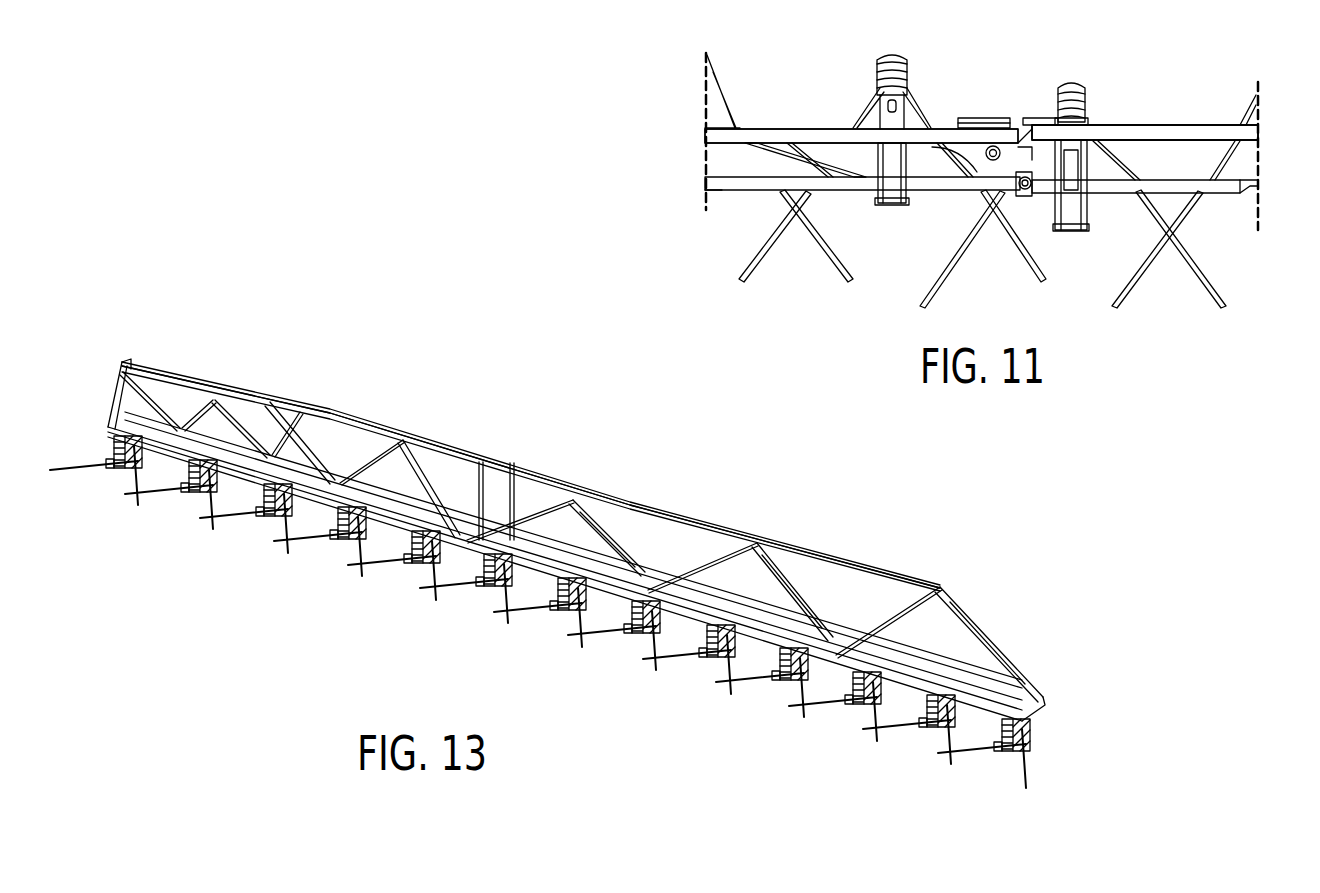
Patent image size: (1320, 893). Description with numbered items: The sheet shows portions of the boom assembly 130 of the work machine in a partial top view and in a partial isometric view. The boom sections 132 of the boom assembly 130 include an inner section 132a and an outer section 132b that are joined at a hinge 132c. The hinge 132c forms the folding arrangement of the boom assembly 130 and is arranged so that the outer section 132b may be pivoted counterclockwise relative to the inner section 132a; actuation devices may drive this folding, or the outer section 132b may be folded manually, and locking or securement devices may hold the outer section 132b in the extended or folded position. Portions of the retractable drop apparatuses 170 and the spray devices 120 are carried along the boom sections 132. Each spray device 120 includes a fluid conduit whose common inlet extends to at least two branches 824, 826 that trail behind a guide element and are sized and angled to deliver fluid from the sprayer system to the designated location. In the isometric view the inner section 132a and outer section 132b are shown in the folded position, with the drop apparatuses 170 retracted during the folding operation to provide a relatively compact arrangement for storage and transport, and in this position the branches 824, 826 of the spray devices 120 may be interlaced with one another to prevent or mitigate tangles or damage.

In FIG. 11, the spray device 120 is at (1087, 117).
In FIG. 11, the boom assembly 130 is at (1143, 123).
In FIG. 11, the boom sections 132 is at (1190, 122).
In FIG. 11, the inner section 132a is at (1203, 124).
In FIG. 13, the inner section 132a is at (538, 480).
In FIG. 11, the outer section 132b is at (940, 120).
In FIG. 13, the outer section 132b is at (363, 407).
In FIG. 11, the hinge 132c is at (1024, 192).
In FIG. 13, the hinge 132c is at (117, 385).
In FIG. 11, the retractable drop apparatus 170 is at (1097, 165).
In FIG. 13, the retractable drop apparatus 170 is at (1027, 747).
In FIG. 11, the branch 824 is at (1193, 277).
In FIG. 11, the branch 826 is at (960, 252).